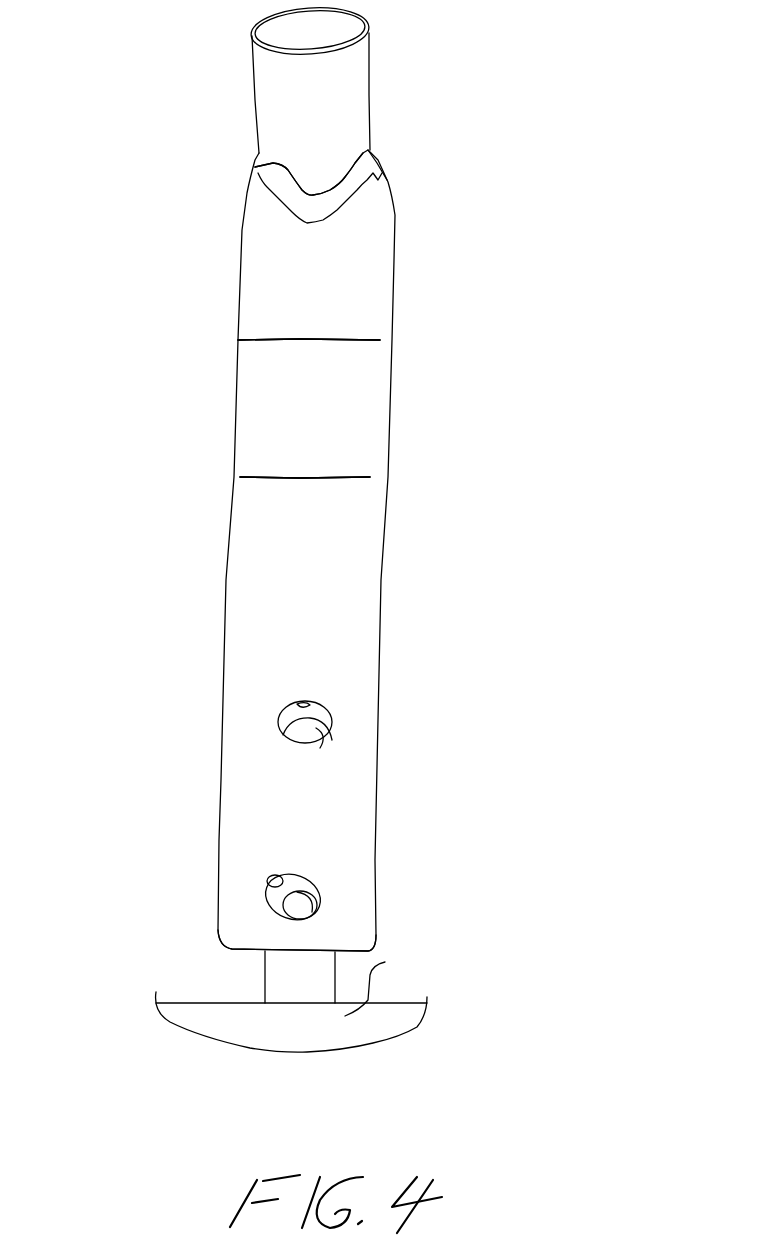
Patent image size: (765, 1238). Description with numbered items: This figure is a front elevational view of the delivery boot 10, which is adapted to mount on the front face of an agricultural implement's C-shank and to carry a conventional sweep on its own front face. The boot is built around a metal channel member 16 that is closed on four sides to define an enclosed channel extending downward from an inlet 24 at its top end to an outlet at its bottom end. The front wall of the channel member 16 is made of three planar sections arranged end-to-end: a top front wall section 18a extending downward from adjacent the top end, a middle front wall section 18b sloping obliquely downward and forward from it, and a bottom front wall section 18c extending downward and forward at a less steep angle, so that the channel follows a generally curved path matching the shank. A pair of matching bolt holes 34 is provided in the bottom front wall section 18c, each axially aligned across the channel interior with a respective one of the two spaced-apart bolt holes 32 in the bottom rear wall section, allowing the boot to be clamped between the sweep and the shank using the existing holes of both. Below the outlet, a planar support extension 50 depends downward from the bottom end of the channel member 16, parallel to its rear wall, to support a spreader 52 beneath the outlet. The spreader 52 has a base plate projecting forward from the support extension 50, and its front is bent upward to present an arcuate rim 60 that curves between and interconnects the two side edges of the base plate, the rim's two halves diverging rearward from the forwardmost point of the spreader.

The delivery boot 10 is at (167, 170).
The inlet 24 is at (350, 105).
The channel member 16 is at (192, 485).
The top front wall section 18a is at (355, 281).
The middle front wall section 18b is at (340, 417).
The bottom front wall section 18c is at (328, 601).
The bolt holes 32 is at (320, 744).
The matching bolt holes 34 is at (313, 708).
The support extension 50 is at (303, 978).
The spreader 52 is at (355, 1060).
The rim 60 is at (387, 977).